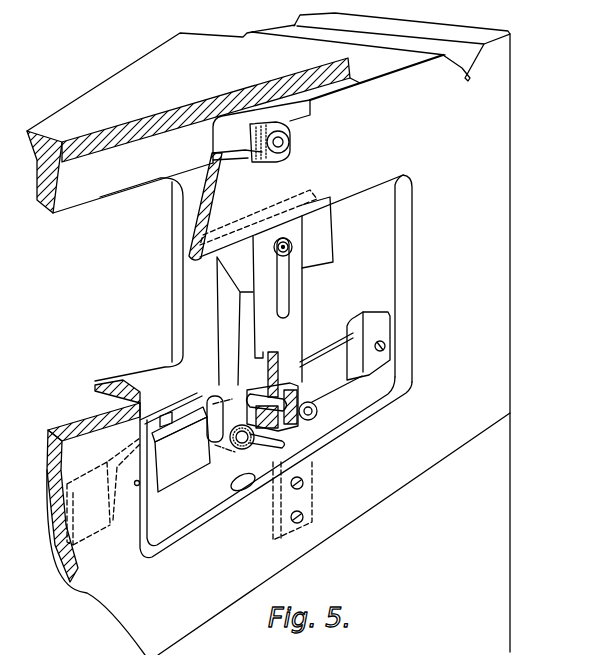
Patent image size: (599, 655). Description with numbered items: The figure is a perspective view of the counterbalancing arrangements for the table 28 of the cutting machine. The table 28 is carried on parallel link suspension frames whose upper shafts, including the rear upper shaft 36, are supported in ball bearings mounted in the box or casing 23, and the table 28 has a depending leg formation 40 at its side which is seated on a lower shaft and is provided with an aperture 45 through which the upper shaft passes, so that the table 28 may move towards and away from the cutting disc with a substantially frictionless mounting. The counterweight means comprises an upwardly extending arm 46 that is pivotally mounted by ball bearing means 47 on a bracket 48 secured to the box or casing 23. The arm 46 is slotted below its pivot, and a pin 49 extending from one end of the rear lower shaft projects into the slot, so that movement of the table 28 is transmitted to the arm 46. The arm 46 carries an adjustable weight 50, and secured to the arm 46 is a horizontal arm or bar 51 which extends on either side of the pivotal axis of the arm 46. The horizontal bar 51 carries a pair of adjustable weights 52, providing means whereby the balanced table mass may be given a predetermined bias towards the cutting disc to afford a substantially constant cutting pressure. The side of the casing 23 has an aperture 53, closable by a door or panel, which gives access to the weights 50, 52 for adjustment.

The box or casing 23 is at (278, 334).
The table 28 is at (236, 122).
The rear upper shaft 36 is at (242, 137).
The depending leg formation 40 is at (195, 208).
The aperture 45 is at (224, 306).
The upwardly extending arm 46 is at (282, 333).
The ball bearing means 47 is at (224, 396).
The bracket 48 is at (308, 432).
The pin 49 is at (272, 450).
The adjustable weight 50 is at (310, 245).
The horizontal arm or bar 51 is at (226, 455).
The adjustable weights 52 is at (150, 498).
The aperture 53 is at (403, 261).